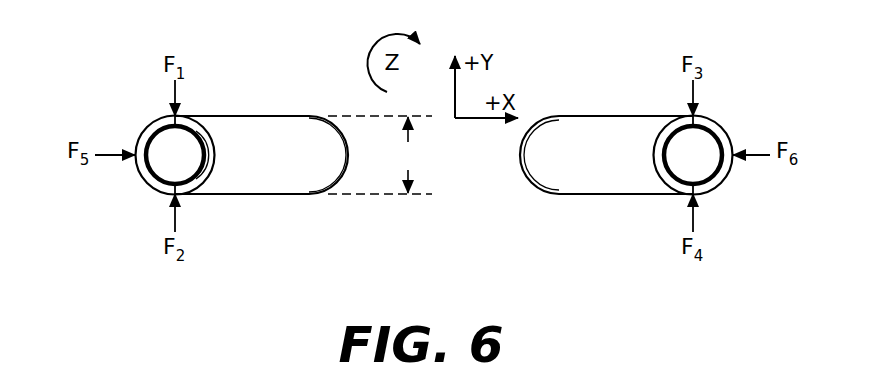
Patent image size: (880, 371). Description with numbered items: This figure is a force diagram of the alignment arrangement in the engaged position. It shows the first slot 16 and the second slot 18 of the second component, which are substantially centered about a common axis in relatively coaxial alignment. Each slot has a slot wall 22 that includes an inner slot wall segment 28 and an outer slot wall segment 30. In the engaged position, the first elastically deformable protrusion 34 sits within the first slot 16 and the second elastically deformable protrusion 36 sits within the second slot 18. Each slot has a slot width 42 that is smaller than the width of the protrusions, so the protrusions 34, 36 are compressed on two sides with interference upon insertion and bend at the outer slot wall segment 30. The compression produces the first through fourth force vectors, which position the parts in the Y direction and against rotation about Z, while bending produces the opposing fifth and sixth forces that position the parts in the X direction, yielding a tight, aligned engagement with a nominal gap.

The first slot 16 is at (262, 134).
The second slot 18 is at (612, 134).
The slot wall 22 is at (611, 186).
The inner slot wall segment 28 is at (334, 186).
The outer slot wall segment 30 is at (138, 172).
The first elastically deformable protrusion 34 is at (214, 164).
The second elastically deformable protrusion 36 is at (655, 164).
The slot width 42 is at (422, 168).